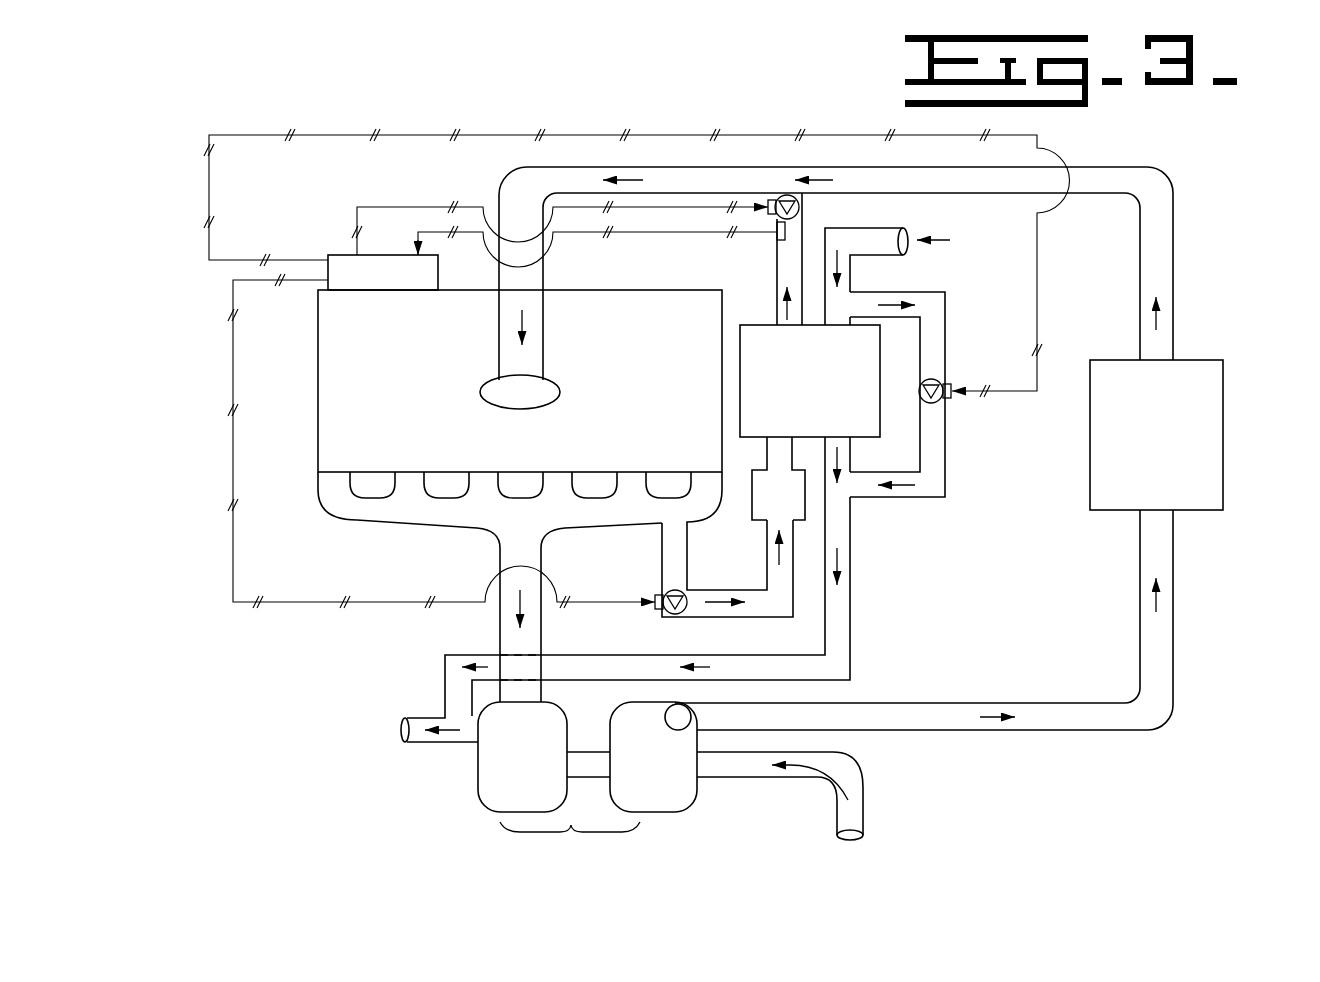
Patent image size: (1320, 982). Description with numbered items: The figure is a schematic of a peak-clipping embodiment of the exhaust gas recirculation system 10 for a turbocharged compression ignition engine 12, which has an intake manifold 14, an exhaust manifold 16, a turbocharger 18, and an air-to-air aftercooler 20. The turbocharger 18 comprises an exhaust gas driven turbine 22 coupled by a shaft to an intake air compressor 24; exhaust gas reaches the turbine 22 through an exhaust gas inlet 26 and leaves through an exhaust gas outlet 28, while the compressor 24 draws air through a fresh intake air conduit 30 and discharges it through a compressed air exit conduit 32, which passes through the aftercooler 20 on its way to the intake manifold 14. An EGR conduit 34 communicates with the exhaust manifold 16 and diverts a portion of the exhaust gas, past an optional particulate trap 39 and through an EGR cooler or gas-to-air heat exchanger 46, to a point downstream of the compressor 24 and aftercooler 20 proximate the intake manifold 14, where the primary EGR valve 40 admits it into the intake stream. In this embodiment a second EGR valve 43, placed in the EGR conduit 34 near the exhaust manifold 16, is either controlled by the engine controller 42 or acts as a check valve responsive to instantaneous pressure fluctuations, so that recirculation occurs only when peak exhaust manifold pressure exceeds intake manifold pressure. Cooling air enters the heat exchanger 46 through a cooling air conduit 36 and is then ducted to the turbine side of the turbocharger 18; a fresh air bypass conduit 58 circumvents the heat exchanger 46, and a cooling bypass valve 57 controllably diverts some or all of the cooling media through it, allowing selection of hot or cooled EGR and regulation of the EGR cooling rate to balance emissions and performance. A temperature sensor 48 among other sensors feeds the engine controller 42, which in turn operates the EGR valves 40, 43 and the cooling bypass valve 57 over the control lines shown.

The exhaust gas recirculation (EGR) system 10 is at (225, 98).
The turbocharged compression ignition engine 12 is at (363, 412).
The intake manifold 14 is at (536, 394).
The exhaust manifold 16 is at (513, 527).
The turbocharger 18 is at (565, 833).
The air-to-air aftercooler 20 is at (1213, 465).
The exhaust gas driven turbine 22 is at (500, 800).
The intake air compressor 24 is at (655, 790).
The exhaust gas inlet 26 is at (545, 687).
The exhaust gas outlet 28 is at (422, 718).
The fresh intake air conduit 30 is at (858, 763).
The compressed air exit conduit 32 is at (952, 730).
The EGR conduit 34 is at (738, 617).
The cooling air conduit 36 is at (850, 635).
The particulate trap 39 is at (752, 500).
The EGR valve 40 is at (805, 217).
The engine controller 42 is at (333, 283).
The EGR valve 43 is at (663, 597).
The EGR cooler or gas to air heat exchanger 46 is at (786, 398).
The temperature sensor 48 is at (780, 242).
The cooling bypass valve 57 is at (950, 383).
The fresh air bypass conduit 58 is at (942, 327).